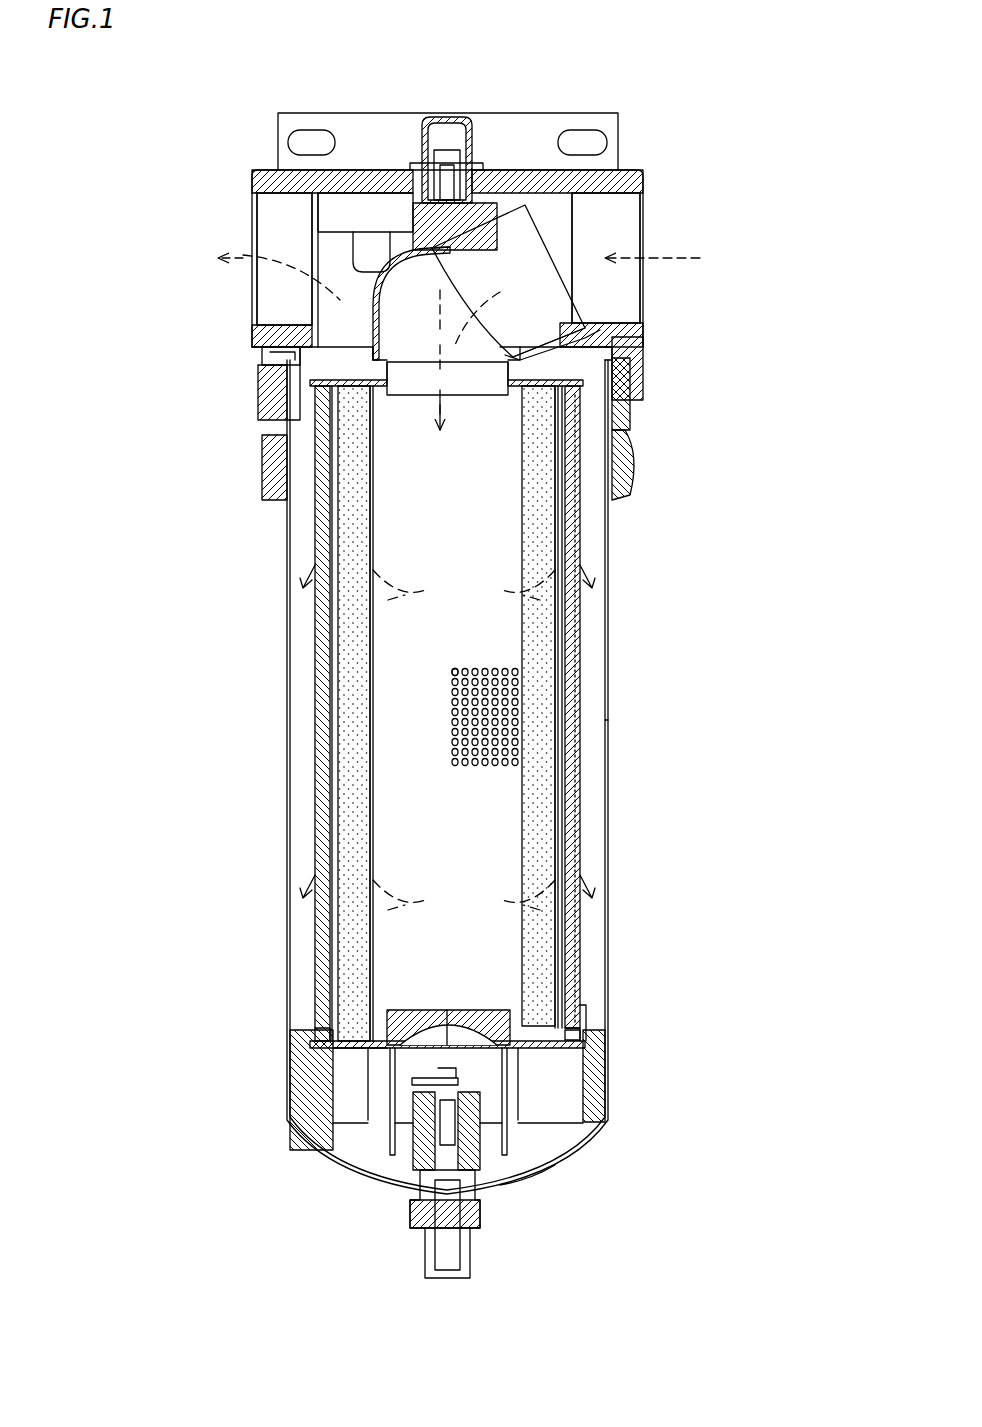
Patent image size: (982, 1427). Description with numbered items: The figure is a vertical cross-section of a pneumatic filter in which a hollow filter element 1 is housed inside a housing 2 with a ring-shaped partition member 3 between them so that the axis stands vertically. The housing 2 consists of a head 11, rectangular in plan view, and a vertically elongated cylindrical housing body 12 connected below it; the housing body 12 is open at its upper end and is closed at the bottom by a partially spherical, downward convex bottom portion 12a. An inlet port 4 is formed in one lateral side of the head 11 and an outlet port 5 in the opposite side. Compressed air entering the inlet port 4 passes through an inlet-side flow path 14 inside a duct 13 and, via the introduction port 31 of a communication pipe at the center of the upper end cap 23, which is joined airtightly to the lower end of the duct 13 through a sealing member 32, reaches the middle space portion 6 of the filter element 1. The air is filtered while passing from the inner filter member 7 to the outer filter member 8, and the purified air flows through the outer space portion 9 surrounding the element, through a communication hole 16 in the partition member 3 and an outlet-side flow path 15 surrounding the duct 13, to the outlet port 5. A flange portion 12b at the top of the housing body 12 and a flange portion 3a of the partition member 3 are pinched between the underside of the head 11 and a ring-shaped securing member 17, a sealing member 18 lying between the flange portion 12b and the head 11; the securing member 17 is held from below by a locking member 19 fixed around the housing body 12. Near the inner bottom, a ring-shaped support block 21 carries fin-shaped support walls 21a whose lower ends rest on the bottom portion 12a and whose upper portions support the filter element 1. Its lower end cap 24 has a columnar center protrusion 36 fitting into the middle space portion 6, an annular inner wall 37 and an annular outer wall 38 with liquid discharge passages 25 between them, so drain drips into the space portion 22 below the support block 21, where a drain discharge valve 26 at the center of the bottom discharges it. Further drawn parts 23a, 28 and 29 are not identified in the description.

The filter element 1 is at (493, 714).
The housing 2 is at (658, 704).
The partition member 3 is at (618, 395).
The flange portion 3a is at (590, 330).
The inlet port 4 is at (615, 213).
The outlet port 5 is at (270, 208).
The middle space portion 6 is at (457, 520).
The inner filter member 7 is at (548, 765).
The outer filter member 8 is at (573, 828).
The outer space portion 9 is at (305, 640).
The head 11 is at (540, 183).
The housing body 12 is at (389, 777).
The bottom portion 12a is at (530, 1185).
The flange portion 12b is at (635, 378).
The duct 13 is at (392, 248).
The inlet-side flow path 14 is at (428, 320).
The outlet-side flow path 15 is at (335, 320).
The communication hole 16 is at (365, 385).
The securing member 17 is at (625, 432).
The sealing member 18 is at (270, 352).
The locking member 19 is at (622, 465).
The support block 21 is at (595, 1100).
The support walls 21a is at (380, 1142).
The space portion 22 is at (392, 1168).
The upper end cap 23 is at (268, 386).
The nut flange 23a is at (276, 420).
The lower end cap 24 is at (306, 1089).
The liquid discharge passages 25 is at (577, 1040).
The drain discharge valve 26 is at (402, 1245).
The filter medium 28 is at (368, 668).
The inner tube 29 is at (323, 805).
The introduction port 31 is at (410, 390).
The sealing member 32 is at (505, 370).
The center protrusion 36 is at (400, 1015).
The inner wall 37 is at (548, 1030).
The outer wall 38 is at (585, 1010).